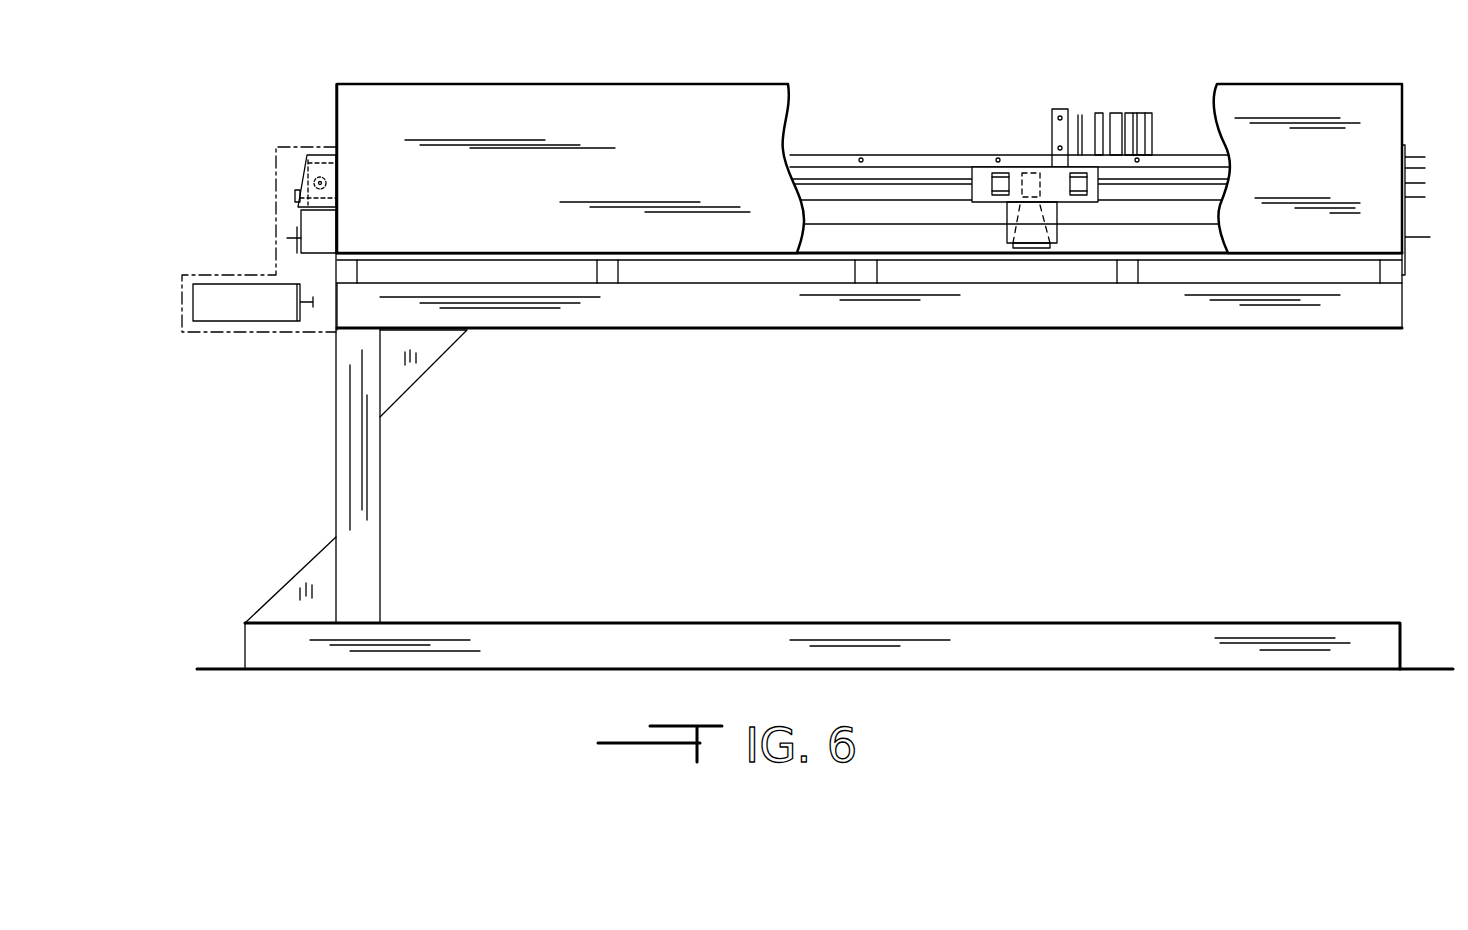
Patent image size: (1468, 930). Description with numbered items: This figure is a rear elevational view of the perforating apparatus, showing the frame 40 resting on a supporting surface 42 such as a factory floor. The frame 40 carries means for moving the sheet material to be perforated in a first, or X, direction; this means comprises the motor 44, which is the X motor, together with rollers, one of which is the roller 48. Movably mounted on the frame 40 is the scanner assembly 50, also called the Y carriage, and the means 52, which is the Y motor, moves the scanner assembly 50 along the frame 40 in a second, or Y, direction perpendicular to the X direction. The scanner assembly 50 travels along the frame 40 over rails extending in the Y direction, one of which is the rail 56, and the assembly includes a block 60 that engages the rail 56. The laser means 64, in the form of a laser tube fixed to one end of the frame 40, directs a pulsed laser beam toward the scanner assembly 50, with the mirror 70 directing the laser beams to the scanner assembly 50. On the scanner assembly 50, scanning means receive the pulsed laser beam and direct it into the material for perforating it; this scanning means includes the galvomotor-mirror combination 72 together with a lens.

The frame 40 is at (397, 403).
The supporting surface 42 is at (213, 668).
The motor 44 is at (230, 332).
The roller 48 is at (813, 213).
The scanner assembly 50 is at (1097, 104).
The means for moving scanner assembly 52 is at (300, 222).
The rail 56 is at (900, 185).
The block 60 is at (986, 196).
The laser means 64 is at (318, 156).
The mirror 70 is at (314, 183).
The galvomotor-mirror combination 72 is at (1031, 175).